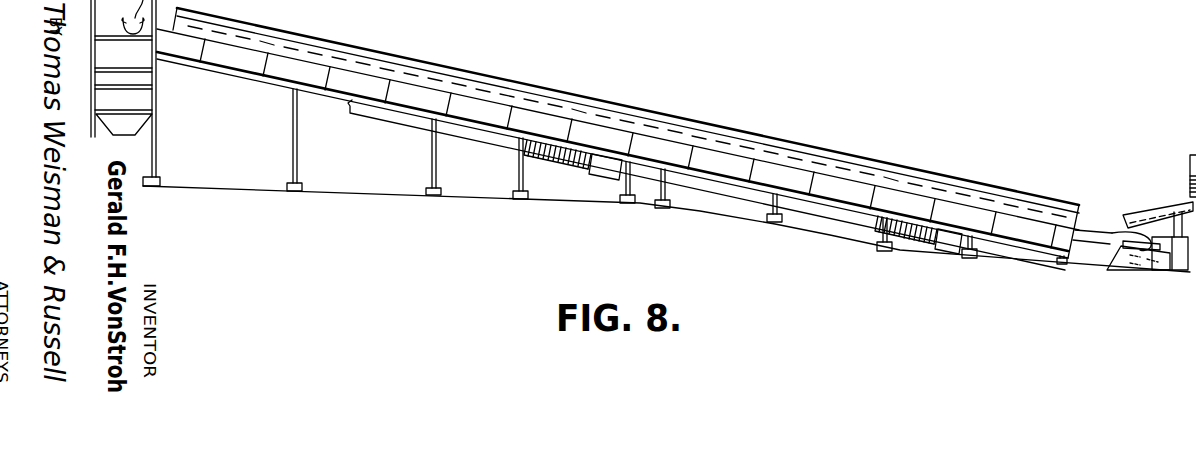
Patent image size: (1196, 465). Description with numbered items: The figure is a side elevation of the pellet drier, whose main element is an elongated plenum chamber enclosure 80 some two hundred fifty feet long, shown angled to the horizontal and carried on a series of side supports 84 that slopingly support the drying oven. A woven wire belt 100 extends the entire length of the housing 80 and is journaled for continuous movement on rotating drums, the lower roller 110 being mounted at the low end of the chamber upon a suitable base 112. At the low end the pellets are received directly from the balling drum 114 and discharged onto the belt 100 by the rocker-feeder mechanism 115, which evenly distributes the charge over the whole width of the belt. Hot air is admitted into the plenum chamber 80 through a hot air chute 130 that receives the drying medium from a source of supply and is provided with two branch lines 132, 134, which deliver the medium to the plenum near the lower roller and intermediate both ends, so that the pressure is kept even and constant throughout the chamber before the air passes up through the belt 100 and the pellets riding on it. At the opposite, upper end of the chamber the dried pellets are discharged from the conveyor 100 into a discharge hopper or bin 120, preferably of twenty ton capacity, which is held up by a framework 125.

The plenum chamber enclosure 80 is at (618, 133).
The side supports 84 is at (292, 143).
The wire belt 100 is at (833, 168).
The lower roller 110 is at (1120, 232).
The base 112 is at (1140, 263).
The balling drum 114 is at (1190, 160).
The rocker-feeder mechanism 115 is at (1158, 212).
The discharge hopper 120 is at (133, 123).
The framework 125 is at (158, 78).
The hot air chute 130 is at (395, 115).
The branch line 132 is at (605, 160).
The branch line 134 is at (942, 235).